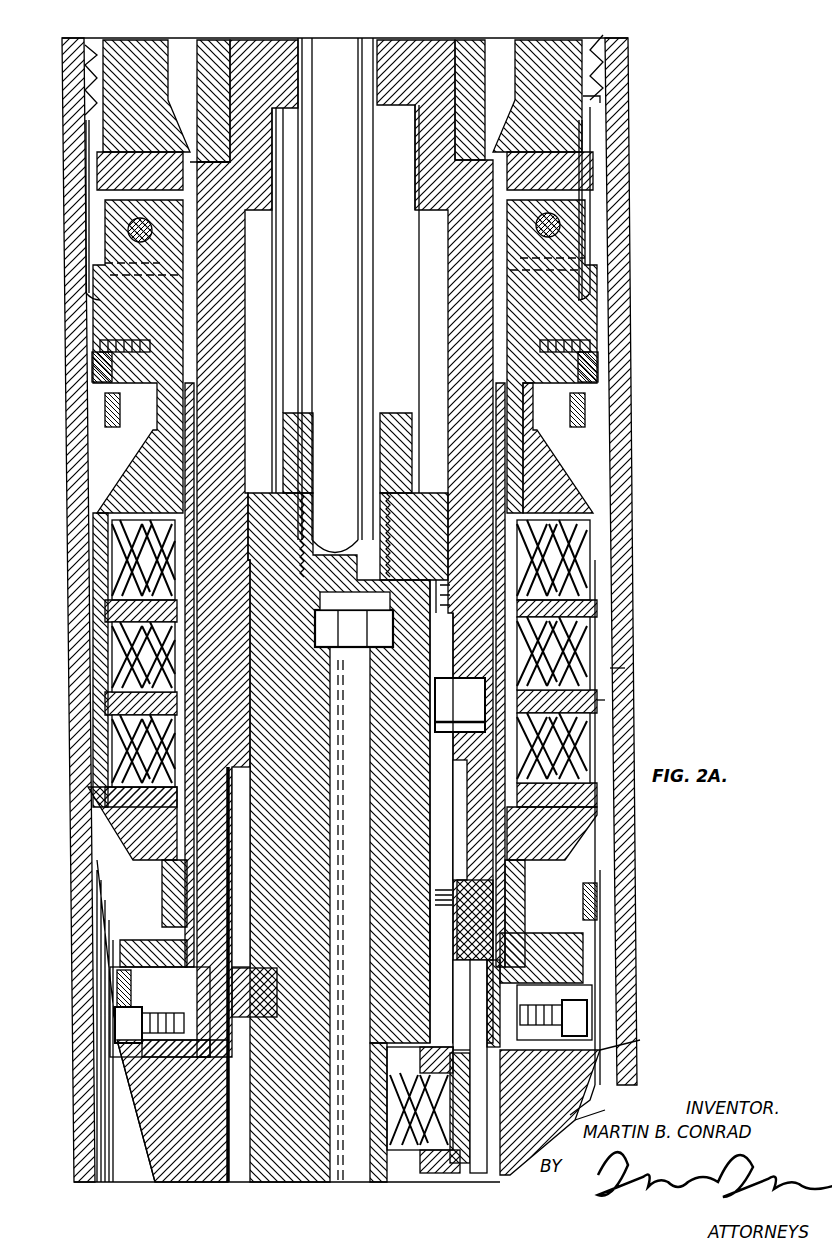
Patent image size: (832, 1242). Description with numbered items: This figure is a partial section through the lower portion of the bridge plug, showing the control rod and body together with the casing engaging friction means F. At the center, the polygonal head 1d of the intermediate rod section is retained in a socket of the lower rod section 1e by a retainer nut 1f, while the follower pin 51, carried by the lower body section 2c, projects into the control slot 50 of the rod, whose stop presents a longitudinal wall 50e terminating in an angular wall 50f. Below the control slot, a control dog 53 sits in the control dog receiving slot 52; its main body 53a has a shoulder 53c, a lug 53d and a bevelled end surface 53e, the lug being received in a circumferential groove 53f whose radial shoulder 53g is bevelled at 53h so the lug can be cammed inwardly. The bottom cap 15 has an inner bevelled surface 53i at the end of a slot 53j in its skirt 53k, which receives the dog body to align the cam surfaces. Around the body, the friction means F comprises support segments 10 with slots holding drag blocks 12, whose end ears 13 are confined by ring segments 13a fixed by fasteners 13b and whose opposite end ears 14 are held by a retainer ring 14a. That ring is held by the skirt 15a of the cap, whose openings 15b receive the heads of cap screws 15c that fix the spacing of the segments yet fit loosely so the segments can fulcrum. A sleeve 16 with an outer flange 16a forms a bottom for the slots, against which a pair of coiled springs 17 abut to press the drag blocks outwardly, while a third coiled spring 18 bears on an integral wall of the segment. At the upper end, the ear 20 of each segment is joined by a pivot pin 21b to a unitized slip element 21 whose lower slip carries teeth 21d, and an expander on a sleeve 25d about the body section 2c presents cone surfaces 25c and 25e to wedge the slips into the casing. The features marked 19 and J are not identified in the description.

The support segment 10 is at (580, 290).
The drag block 12 is at (583, 802).
The end ear 13 is at (560, 412).
The ring segment 13a is at (582, 390).
The fastener 13b is at (592, 345).
The end ear 14 is at (600, 843).
The retainer ring 14a is at (122, 937).
The bottom cap 15 is at (492, 1160).
The skirt 15a is at (117, 1000).
The openings 15b is at (118, 1048).
The cap screws 15c is at (118, 1030).
The sleeve 16 is at (510, 862).
The outer flange 16a is at (558, 937).
The coiled springs 17 is at (588, 636).
The third coiled spring 18 is at (583, 545).
The threaded connection 19 is at (405, 505).
The polygonal head 1d is at (378, 645).
The lower rod section 1e is at (318, 786).
The retainer nut 1f is at (395, 425).
The ear 20 is at (581, 196).
The unitized slip element 21 is at (602, 96).
The pivot pin 21b is at (560, 228).
The teeth 21d is at (592, 55).
The cone surface 25c is at (540, 52).
The sleeve 25d is at (470, 55).
The cone surface 25e is at (580, 133).
The body section 2c is at (400, 70).
The control slot 50 is at (432, 665).
The follower pin 51 is at (440, 724).
The wall 50e is at (440, 940).
The angular wall 50f is at (438, 893).
The control dog receiving slot 52 is at (390, 1160).
The control dog 53 is at (440, 1168).
The main body 53a is at (412, 1165).
The shoulder 53c is at (462, 1172).
The lug 53d is at (462, 1118).
The bevelled end surface 53e is at (470, 1062).
The circumferential groove 53f is at (468, 810).
The radial shoulder 53g is at (470, 872).
The bevel 53h is at (475, 920).
The inner bevelled surface 53i is at (490, 1088).
The slot 53j is at (455, 1006).
The skirt 53k is at (254, 992).
The casing engaging friction means F is at (614, 668).
The junction J is at (603, 700).